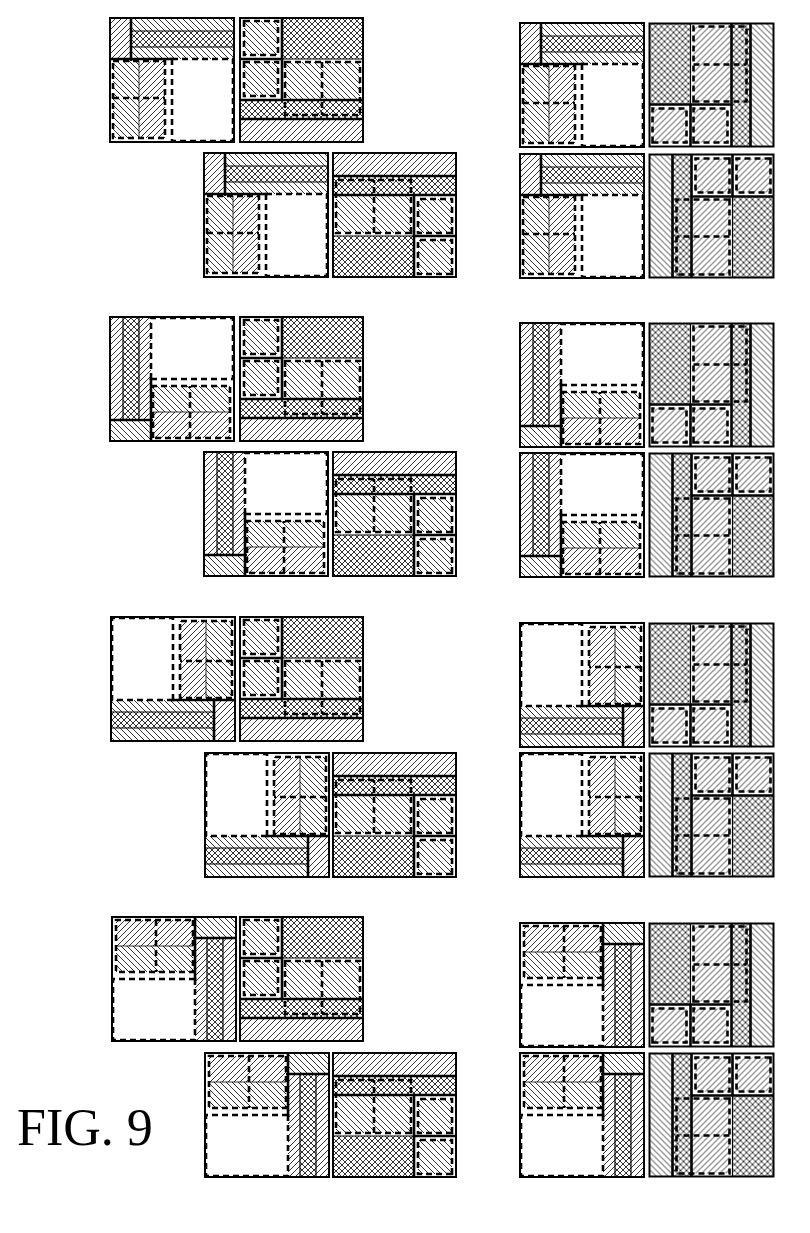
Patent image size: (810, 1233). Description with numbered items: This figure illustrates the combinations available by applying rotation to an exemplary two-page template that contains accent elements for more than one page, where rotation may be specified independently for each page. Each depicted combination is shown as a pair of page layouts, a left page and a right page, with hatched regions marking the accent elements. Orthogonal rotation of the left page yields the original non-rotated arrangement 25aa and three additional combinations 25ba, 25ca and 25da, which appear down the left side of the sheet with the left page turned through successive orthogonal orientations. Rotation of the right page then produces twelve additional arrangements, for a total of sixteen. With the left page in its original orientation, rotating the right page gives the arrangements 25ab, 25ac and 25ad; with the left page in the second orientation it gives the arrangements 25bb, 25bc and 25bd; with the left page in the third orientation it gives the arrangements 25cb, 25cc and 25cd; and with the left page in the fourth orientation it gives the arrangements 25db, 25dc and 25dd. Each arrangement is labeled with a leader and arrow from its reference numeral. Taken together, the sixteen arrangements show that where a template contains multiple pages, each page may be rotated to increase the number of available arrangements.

The original non-rotated arrangement 25aa is at (64, 76).
The arrangement 25ab is at (477, 89).
The arrangement 25ac is at (160, 226).
The arrangement 25ad is at (487, 165).
The arrangement 25ba is at (64, 378).
The arrangement 25bb is at (477, 391).
The arrangement 25bc is at (160, 526).
The arrangement 25bd is at (487, 464).
The arrangement 25ca is at (64, 678).
The arrangement 25cb is at (477, 694).
The arrangement 25cc is at (160, 828).
The arrangement 25cd is at (487, 764).
The arrangement 25da is at (64, 978).
The arrangement 25db is at (477, 993).
The arrangement 25dc is at (170, 1092).
The arrangement 25dd is at (487, 1064).